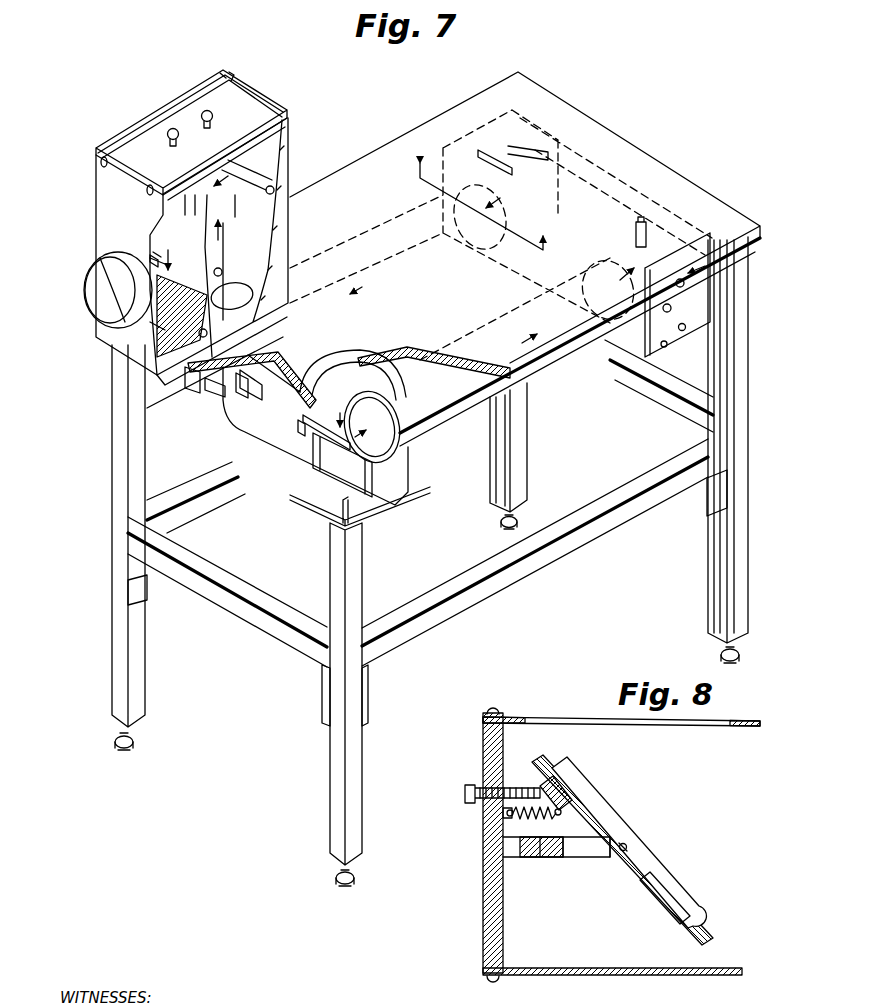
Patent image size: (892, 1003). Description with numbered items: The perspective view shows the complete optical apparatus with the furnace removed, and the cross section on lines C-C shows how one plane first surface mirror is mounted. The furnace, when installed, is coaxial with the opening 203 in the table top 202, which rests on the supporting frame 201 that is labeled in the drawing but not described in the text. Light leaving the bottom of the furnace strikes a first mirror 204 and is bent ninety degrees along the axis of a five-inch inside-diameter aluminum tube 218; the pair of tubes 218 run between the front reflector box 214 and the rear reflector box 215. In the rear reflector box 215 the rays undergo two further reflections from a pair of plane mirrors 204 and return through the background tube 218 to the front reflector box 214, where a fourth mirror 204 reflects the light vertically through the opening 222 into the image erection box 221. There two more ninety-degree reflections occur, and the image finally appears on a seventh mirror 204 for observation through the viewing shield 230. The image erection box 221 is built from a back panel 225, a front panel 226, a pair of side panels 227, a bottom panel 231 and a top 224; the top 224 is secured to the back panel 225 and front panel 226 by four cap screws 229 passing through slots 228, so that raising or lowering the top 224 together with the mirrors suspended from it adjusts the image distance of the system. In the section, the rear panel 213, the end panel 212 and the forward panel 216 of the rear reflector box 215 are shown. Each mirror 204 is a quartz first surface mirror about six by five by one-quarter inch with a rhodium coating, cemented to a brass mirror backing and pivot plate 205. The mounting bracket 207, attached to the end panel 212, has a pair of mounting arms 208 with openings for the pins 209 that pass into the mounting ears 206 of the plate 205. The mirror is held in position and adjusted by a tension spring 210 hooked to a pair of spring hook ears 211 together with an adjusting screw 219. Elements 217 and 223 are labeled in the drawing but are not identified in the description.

In FIG. 7, the table frame 201 is at (805, 400).
In FIG. 7, the table top 202 is at (688, 179).
In FIG. 7, the opening 203 is at (347, 360).
In FIG. 7, the mirror 204 is at (640, 225).
In FIG. 8, the mirror 204 is at (553, 772).
In FIG. 8, the mirror backing and pivot plate 205 is at (653, 897).
In FIG. 8, the mounting ears 206 is at (610, 820).
In FIG. 8, the mounting bracket 207 is at (557, 857).
In FIG. 8, the mounting arms 208 is at (600, 855).
In FIG. 8, the pins 209 is at (635, 847).
In FIG. 8, the tension spring 210 is at (547, 840).
In FIG. 8, the spring hook ears 211 is at (517, 820).
In FIG. 8, the end panel 212 is at (482, 880).
In FIG. 8, the rear panel 213 is at (580, 970).
In FIG. 7, the front reflector box 214 is at (393, 500).
In FIG. 7, the rear reflector box 215 is at (687, 333).
In FIG. 8, the rear reflector box 215 is at (572, 936).
In FIG. 8, the forward panel 216 is at (753, 730).
In FIG. 8, the top plate 217 is at (643, 727).
In FIG. 7, the aluminum tube 218 is at (410, 227).
In FIG. 8, the adjusting screw 219 is at (472, 790).
In FIG. 7, the image erection box 221 is at (195, 212).
In FIG. 7, the opening 222 is at (280, 273).
In FIG. 7, the inner duct 223 is at (280, 253).
In FIG. 7, the top 224 is at (215, 95).
In FIG. 7, the back panel 225 is at (270, 94).
In FIG. 7, the front panel 226 is at (110, 215).
In FIG. 7, the side panels 227 is at (183, 102).
In FIG. 7, the slots 228 is at (235, 76).
In FIG. 7, the cap screws 229 is at (98, 182).
In FIG. 7, the viewing shield 230 is at (92, 272).
In FIG. 7, the bottom panel 231 is at (255, 320).